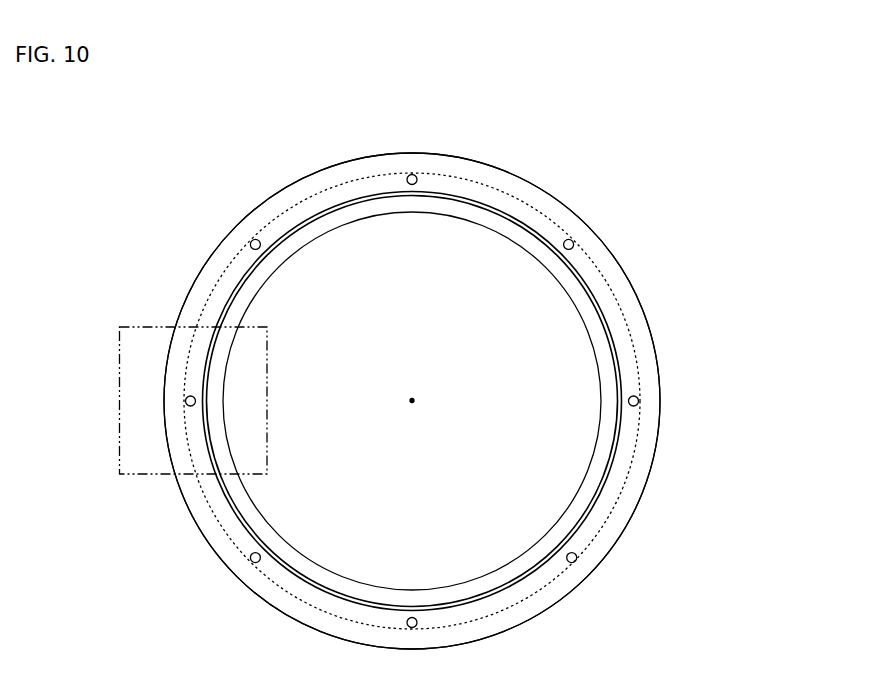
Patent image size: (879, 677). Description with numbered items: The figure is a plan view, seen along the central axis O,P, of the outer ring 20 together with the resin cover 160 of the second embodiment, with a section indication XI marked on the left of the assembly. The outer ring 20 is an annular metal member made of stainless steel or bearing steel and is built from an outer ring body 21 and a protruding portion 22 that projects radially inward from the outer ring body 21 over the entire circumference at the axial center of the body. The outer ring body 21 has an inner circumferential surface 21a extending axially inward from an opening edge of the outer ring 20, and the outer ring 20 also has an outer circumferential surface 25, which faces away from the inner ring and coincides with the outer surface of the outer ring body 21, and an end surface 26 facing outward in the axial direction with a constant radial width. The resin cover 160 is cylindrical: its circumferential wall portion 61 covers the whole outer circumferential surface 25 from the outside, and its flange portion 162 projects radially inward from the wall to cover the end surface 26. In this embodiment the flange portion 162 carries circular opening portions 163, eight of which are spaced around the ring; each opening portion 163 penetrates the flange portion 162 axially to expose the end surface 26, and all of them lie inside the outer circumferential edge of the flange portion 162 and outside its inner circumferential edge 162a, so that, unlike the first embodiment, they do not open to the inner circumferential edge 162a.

The resin cover 160 is at (318, 168).
The opening portion 163 is at (408, 184).
The flange portion 162 is at (486, 195).
The inner circumferential edge of flange portion 162a is at (497, 205).
The circumferential wall portion 61 is at (197, 277).
The central axis O,P is at (412, 400).
The section XI is at (119, 398).
The protruding portion 22 is at (555, 538).
The outer ring 20 is at (501, 567).
The inner circumferential surface 21a is at (366, 590).
The outer ring body 21 is at (412, 606).
The outer circumferential surface 25 is at (638, 482).
The end surface 26 is at (575, 559).